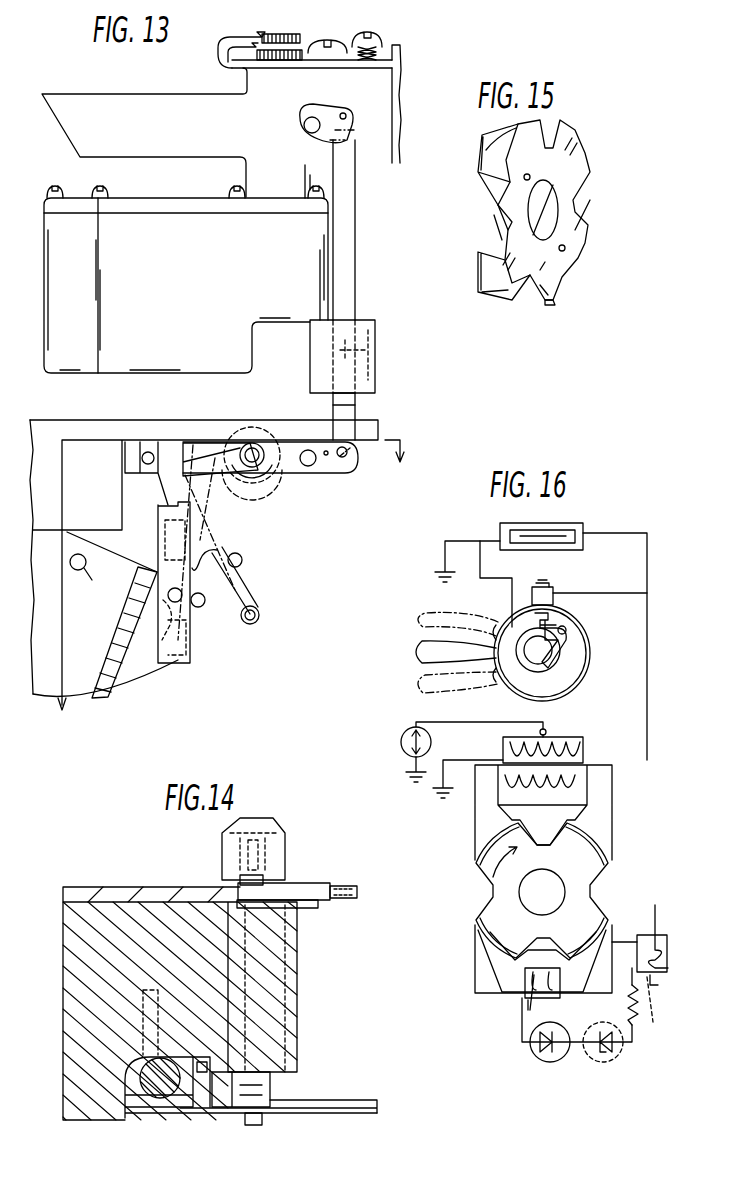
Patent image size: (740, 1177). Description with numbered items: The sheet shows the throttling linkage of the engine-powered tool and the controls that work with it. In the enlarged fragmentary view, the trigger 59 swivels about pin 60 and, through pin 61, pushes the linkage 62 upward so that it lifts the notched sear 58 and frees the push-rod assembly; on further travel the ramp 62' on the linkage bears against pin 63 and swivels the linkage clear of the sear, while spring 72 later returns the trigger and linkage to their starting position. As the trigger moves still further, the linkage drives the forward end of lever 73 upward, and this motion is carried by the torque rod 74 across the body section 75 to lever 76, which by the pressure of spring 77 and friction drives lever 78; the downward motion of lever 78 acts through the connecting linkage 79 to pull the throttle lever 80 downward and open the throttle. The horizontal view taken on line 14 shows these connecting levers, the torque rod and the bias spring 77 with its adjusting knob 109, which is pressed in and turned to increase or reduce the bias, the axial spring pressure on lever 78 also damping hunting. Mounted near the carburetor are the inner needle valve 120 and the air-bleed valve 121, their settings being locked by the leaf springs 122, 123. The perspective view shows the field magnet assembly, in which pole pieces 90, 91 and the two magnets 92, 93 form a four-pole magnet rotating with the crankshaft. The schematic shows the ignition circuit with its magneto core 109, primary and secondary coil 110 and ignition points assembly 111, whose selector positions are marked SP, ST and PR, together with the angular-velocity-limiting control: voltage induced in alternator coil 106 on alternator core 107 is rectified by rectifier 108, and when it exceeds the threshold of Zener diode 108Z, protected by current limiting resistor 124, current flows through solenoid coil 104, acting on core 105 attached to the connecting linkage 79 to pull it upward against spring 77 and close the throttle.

In FIG. 13, the section line 14— 14 is at (229, 596).
In FIG. 13, the notched sear 58 is at (160, 480).
In FIG. 14, the notched sear 58 is at (160, 1095).
In FIG. 13, the trigger 59 is at (128, 660).
In FIG. 14, the trigger 59 is at (135, 1090).
In FIG. 13, the pin 60 is at (83, 580).
In FIG. 13, the pin 61 is at (168, 598).
In FIG. 13, the linkage 62 is at (197, 595).
In FIG. 14, the linkage 62 is at (208, 1117).
In FIG. 13, the ramp 62' is at (202, 631).
In FIG. 13, the pin 63 is at (200, 607).
In FIG. 13, the spring 72 is at (244, 588).
In FIG. 13, the lever 73 is at (208, 470).
In FIG. 14, the lever 73 is at (270, 1076).
In FIG. 13, the torque rod 74 is at (253, 445).
In FIG. 14, the torque rod 74 is at (253, 1126).
In FIG. 13, the body section 75 is at (186, 435).
In FIG. 14, the body section 75 is at (100, 1100).
In FIG. 13, the lever 76 is at (296, 464).
In FIG. 14, the lever 76 is at (300, 910).
In FIG. 14, the spring 77 is at (290, 890).
In FIG. 13, the lever 78 is at (335, 465).
In FIG. 14, the lever 78 is at (340, 900).
In FIG. 13, the connecting linkage 79 is at (356, 212).
In FIG. 13, the throttle lever 80 is at (300, 123).
In FIG. 15, the pole piece 90 is at (498, 268).
In FIG. 16, the pole piece 90 is at (490, 868).
In FIG. 15, the pole piece 91 is at (492, 148).
In FIG. 16, the pole piece 91 is at (600, 860).
In FIG. 15, the magnet 92 is at (496, 210).
In FIG. 15, the magnet 93 is at (540, 298).
In FIG. 13, the solenoid coil 104 is at (370, 380).
In FIG. 16, the solenoid coil 104 is at (643, 938).
In FIG. 13, the solenoid core 105 is at (350, 400).
In FIG. 16, the solenoid core 105 is at (653, 1025).
In FIG. 16, the alternator coil 106 is at (530, 1000).
In FIG. 16, the alternator core 107 is at (495, 970).
In FIG. 16, the rectifier 108 is at (548, 1062).
In FIG. 16, the Zener diode 108Z is at (600, 1062).
In FIG. 13, the knob / magneto core 109 is at (250, 480).
In FIG. 16, the knob / magneto core 109 is at (600, 818).
In FIG. 14, the knob / magneto core 109 is at (222, 862).
In FIG. 16, the primary and secondary coil 110 is at (578, 755).
In FIG. 16, the ignition points assembly 111 is at (565, 622).
In FIG. 13, the inner needle valve 120 is at (285, 42).
In FIG. 13, the valve 121 is at (268, 58).
In FIG. 13, the leaf spring 122 is at (225, 66).
In FIG. 13, the leaf spring 123 is at (220, 50).
In FIG. 16, the current limiting resistor 124 is at (636, 1030).
In FIG. 16, the spin position SP is at (438, 621).
In FIG. 16, the start position ST is at (437, 651).
In FIG. 16, the prepare position PR is at (438, 683).